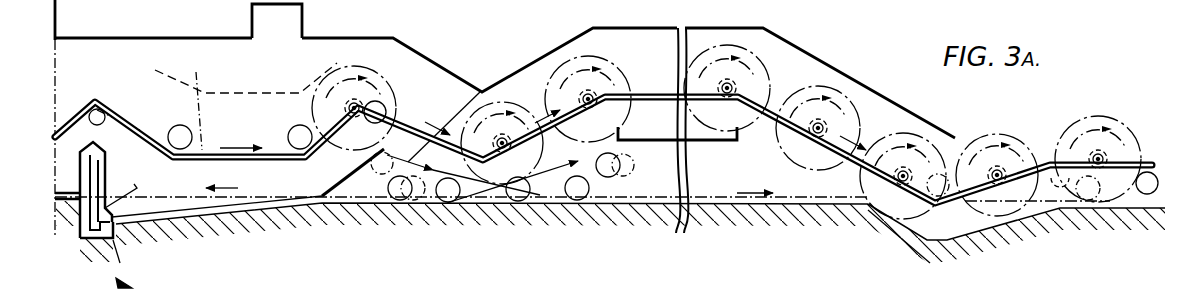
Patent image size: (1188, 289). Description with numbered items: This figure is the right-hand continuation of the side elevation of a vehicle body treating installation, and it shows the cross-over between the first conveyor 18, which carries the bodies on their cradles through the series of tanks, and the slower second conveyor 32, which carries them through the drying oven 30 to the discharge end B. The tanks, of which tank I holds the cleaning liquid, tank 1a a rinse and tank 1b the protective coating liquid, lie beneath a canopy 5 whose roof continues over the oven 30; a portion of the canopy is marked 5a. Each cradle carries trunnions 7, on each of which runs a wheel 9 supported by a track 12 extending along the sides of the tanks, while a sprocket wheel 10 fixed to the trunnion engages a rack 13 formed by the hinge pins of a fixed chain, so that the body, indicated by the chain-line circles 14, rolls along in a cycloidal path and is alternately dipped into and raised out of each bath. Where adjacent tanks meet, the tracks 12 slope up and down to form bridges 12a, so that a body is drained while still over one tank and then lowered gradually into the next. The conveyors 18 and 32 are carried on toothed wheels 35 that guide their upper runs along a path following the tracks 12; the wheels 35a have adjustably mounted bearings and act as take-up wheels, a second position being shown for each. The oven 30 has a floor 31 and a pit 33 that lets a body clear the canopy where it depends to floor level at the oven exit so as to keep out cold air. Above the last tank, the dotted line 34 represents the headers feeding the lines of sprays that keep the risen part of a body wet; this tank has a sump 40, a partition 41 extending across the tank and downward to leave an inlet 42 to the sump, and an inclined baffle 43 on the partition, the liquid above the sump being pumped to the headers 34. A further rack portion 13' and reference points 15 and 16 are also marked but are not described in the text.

The canopy 5 is at (437, 63).
The housing extension 5a is at (304, 22).
The trunnion 7 is at (900, 182).
The wheel 9 is at (903, 170).
The sprocket wheel 10 is at (297, 185).
The track 12 is at (483, 158).
The bridges 12a is at (322, 117).
The rack 13 is at (603, 145).
The conveyor band section 13' is at (805, 186).
The vehicle body 14 is at (527, 117).
The zone 15 is at (803, 6).
The zone 16 is at (720, 5).
The conveyor 18 is at (197, 101).
The drying oven 30 is at (828, 83).
The floor 31 is at (688, 142).
The second conveyor 32 is at (632, 90).
The pit 33 is at (958, 224).
The headers 34 is at (258, 93).
The toothed wheels 35 is at (174, 131).
The take-up wheels 35a is at (400, 198).
The sump 40 is at (96, 215).
The partition 41 is at (107, 165).
The inlet 42 is at (157, 240).
The inclined baffle 43 is at (200, 222).
The tank 1a is at (890, 6).
The tank 1b is at (68, 190).
The tank I is at (1003, 3).
The discharge end B is at (1120, 92).